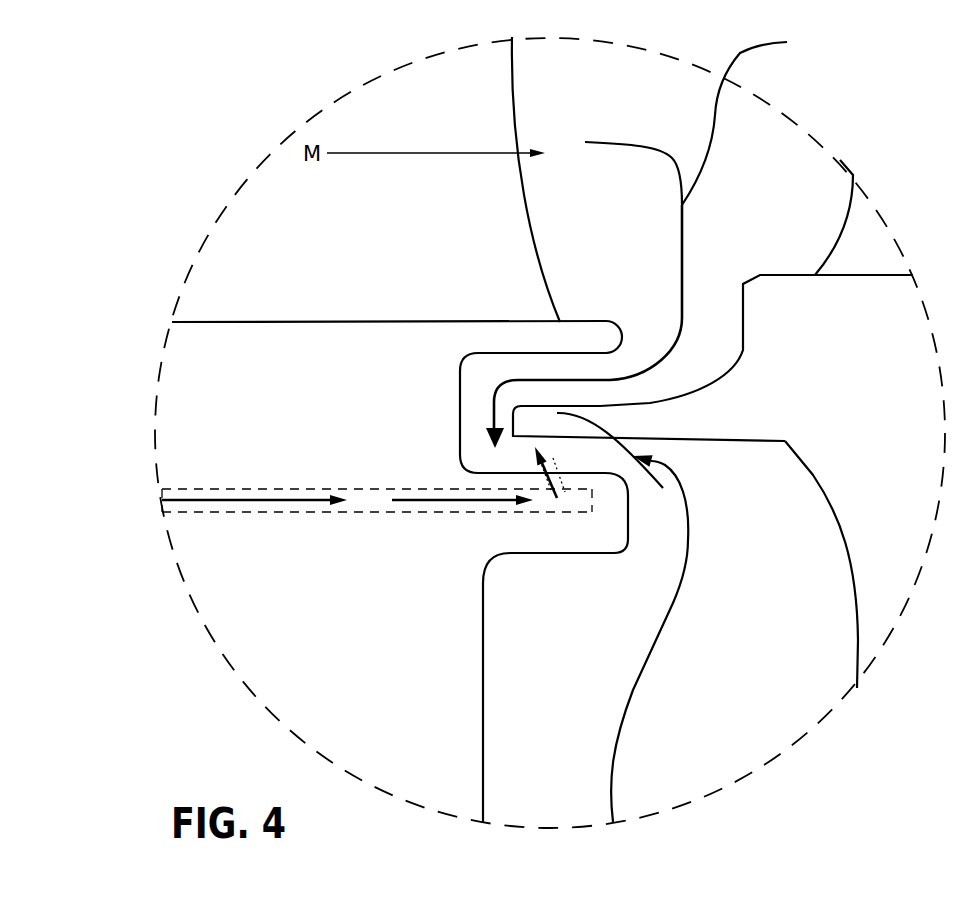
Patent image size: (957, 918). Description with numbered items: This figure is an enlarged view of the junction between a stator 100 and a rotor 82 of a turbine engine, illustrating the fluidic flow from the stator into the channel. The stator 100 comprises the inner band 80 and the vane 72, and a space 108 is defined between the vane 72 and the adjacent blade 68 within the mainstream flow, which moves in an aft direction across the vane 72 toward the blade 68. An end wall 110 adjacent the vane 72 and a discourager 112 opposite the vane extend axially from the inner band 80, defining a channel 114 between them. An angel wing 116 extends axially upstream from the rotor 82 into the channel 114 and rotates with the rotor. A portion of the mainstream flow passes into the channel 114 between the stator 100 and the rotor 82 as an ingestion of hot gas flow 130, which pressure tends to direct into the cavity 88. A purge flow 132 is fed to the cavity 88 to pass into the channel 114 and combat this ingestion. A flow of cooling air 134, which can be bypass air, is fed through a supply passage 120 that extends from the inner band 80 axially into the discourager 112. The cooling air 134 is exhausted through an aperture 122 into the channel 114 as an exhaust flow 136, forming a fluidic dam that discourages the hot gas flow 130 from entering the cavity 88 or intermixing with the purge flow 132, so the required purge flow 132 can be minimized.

The stator 100 is at (236, 244).
The blade 68 is at (873, 238).
The vane 72 is at (362, 244).
The inner band 80 is at (274, 387).
The rotor 82 is at (884, 402).
The cavity 88 is at (774, 726).
The space 108 is at (637, 114).
The end wall 110 is at (582, 336).
The discourager 112 is at (627, 530).
The channel 114 is at (471, 375).
The angel wing 116 is at (703, 423).
The supply passage 120 is at (245, 488).
The aperture 122 is at (552, 487).
The hot gas flow 130 is at (752, 119).
The purge flow 132 is at (633, 693).
The cooling air 134 is at (245, 500).
The exhaust flow 136 is at (553, 495).